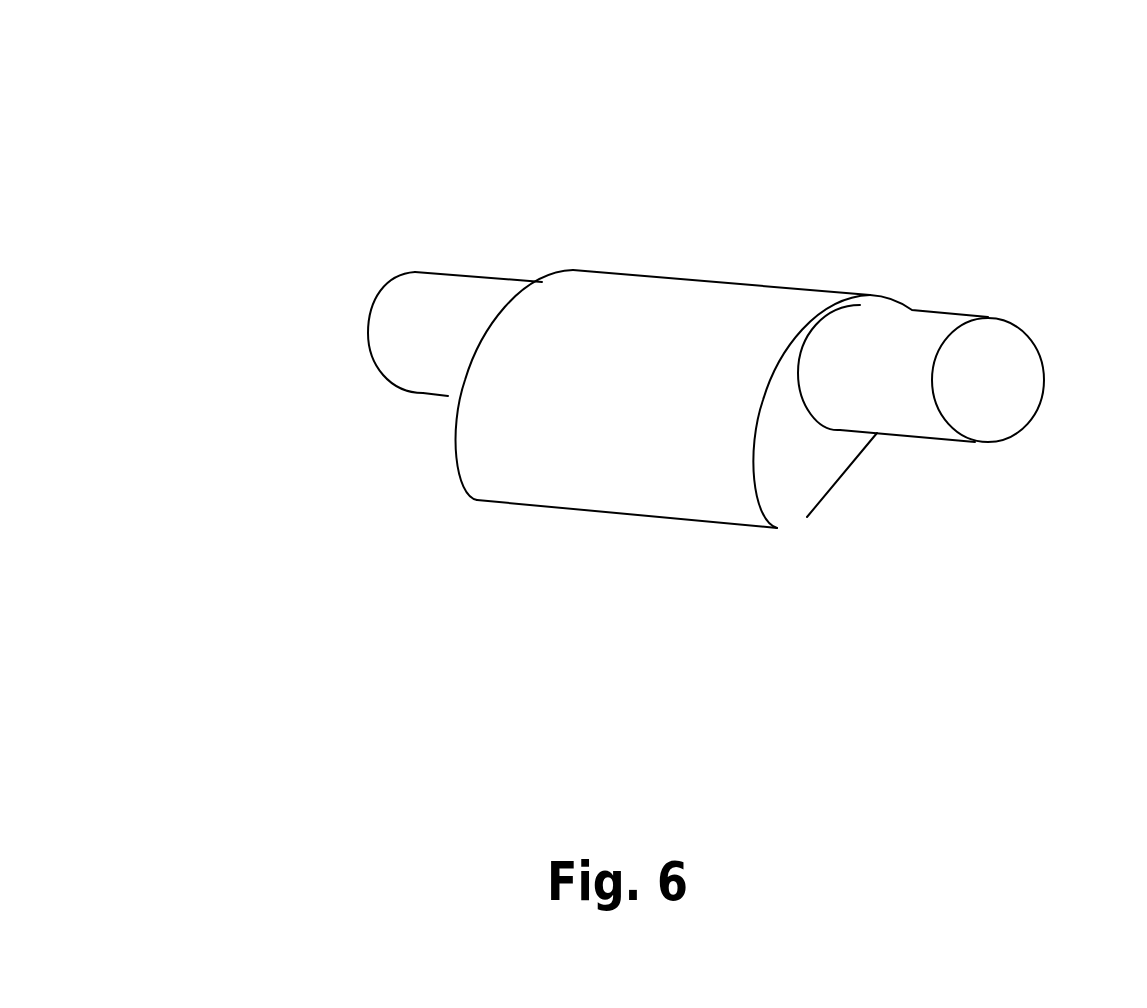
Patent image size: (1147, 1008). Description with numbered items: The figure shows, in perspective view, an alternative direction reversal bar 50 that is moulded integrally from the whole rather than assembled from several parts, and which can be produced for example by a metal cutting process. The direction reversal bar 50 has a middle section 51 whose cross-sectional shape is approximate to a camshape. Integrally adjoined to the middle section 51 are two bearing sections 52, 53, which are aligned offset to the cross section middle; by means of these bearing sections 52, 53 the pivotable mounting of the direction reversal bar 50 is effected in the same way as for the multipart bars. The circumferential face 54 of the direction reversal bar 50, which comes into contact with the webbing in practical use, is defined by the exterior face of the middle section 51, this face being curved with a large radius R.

The direction reversal bar 50 is at (638, 238).
The middle section 51 is at (395, 328).
The bearing section 52 is at (897, 360).
The bearing section 53 is at (788, 450).
The circumferential face 54 is at (625, 420).
The radius R is at (477, 337).